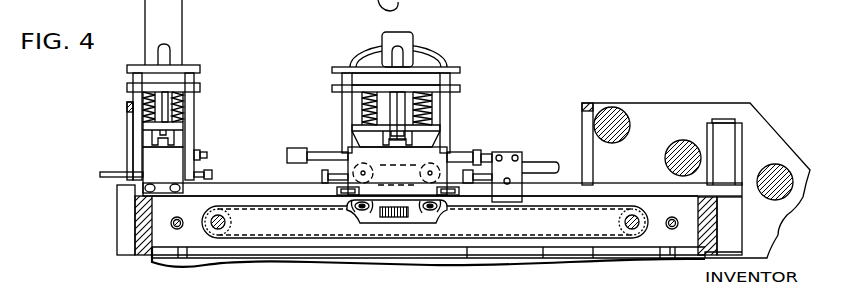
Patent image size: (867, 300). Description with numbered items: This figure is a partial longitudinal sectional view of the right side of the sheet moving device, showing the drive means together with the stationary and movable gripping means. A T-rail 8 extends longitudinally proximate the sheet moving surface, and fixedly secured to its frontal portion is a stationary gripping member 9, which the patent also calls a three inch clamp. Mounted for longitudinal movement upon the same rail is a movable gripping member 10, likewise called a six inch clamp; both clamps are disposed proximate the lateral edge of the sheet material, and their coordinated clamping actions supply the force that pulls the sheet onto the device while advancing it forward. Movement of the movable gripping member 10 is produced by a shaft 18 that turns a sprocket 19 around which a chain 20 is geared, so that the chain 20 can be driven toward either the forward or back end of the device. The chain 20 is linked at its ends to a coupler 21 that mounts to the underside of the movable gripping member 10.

The T-rail 8 is at (248, 184).
The stationary gripping member 9 is at (213, 117).
The movable gripping member 10 is at (459, 115).
The shaft 18 is at (223, 219).
The sprocket 19 is at (233, 233).
The chain 20 is at (407, 243).
The coupler 21 is at (447, 217).